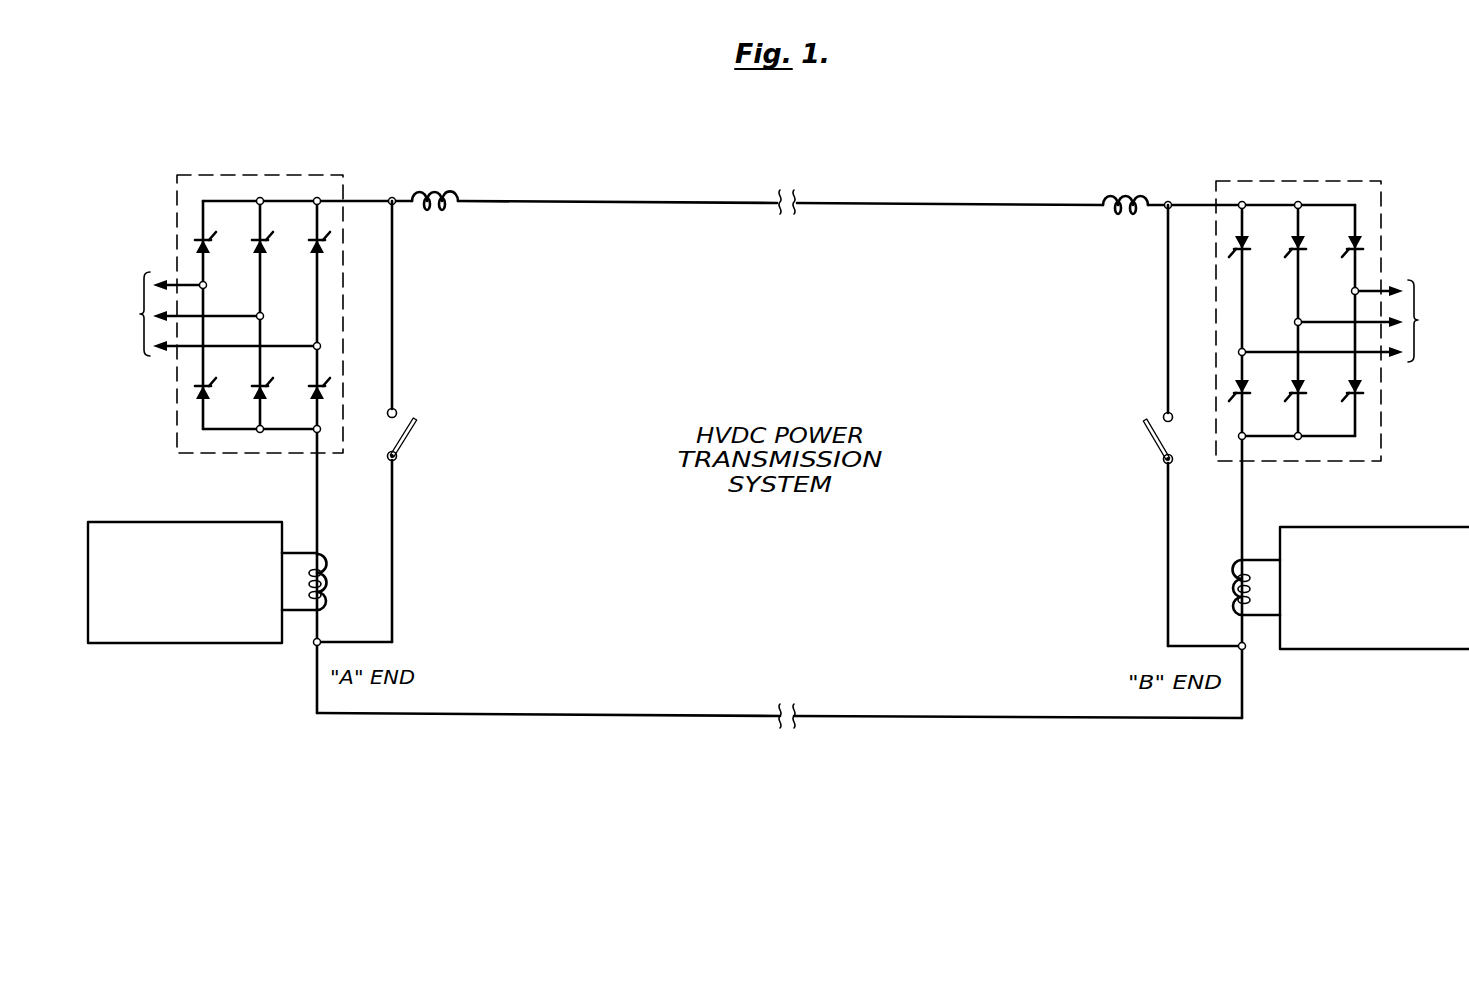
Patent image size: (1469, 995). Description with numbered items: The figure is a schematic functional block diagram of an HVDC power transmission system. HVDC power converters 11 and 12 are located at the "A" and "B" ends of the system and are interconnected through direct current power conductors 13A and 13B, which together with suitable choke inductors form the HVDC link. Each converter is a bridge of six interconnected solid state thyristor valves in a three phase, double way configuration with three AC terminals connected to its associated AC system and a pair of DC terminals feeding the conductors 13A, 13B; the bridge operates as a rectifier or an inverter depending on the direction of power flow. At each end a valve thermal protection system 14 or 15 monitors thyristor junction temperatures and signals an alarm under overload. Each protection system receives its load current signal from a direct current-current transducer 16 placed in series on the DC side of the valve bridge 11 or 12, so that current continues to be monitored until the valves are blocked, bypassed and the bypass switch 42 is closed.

The HVDC power converter 11 is at (252, 175).
The HVDC power converter 12 is at (1297, 181).
The direct current power conductor 13A is at (731, 201).
The direct current power conductor 13B is at (850, 720).
The valve thermal protection system 14 is at (185, 643).
The valve thermal protection system 15 is at (1376, 650).
The direct current-current transducer 16 is at (326, 557).
The bypass switch 42 is at (416, 421).